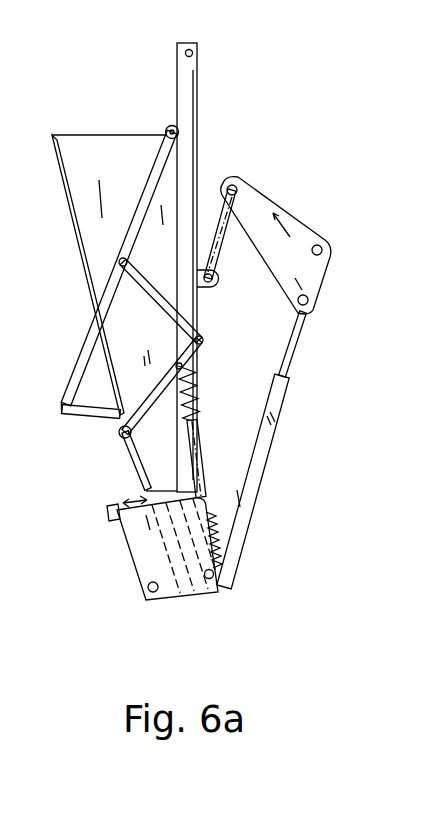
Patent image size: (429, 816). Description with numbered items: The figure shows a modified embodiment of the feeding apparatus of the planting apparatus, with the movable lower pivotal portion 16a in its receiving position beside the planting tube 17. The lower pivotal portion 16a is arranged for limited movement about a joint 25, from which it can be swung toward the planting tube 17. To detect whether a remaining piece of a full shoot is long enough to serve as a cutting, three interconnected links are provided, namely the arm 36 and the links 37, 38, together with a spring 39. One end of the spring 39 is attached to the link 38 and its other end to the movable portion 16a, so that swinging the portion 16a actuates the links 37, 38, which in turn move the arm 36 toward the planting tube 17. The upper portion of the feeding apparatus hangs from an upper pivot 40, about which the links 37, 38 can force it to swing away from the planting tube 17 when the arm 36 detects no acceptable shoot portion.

The planting tube 17 is at (188, 99).
The upper pivot 40 is at (165, 126).
The arm 36 is at (97, 325).
The link 37 is at (172, 318).
The link 38 is at (133, 446).
The spring 39 is at (197, 383).
The lower pivotal portion 16a is at (143, 565).
The joint 25 is at (148, 590).